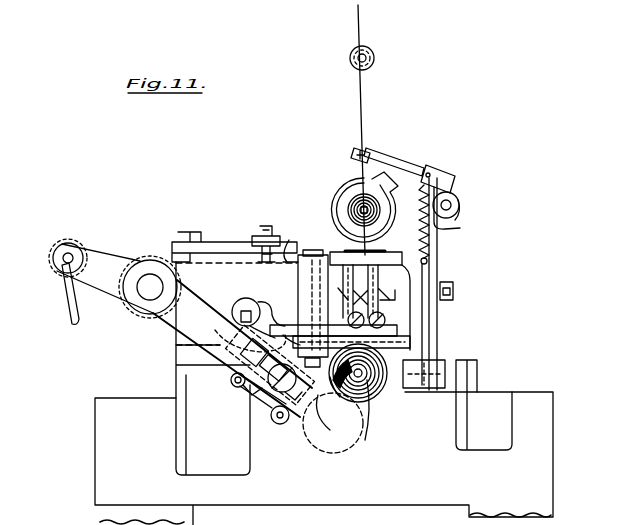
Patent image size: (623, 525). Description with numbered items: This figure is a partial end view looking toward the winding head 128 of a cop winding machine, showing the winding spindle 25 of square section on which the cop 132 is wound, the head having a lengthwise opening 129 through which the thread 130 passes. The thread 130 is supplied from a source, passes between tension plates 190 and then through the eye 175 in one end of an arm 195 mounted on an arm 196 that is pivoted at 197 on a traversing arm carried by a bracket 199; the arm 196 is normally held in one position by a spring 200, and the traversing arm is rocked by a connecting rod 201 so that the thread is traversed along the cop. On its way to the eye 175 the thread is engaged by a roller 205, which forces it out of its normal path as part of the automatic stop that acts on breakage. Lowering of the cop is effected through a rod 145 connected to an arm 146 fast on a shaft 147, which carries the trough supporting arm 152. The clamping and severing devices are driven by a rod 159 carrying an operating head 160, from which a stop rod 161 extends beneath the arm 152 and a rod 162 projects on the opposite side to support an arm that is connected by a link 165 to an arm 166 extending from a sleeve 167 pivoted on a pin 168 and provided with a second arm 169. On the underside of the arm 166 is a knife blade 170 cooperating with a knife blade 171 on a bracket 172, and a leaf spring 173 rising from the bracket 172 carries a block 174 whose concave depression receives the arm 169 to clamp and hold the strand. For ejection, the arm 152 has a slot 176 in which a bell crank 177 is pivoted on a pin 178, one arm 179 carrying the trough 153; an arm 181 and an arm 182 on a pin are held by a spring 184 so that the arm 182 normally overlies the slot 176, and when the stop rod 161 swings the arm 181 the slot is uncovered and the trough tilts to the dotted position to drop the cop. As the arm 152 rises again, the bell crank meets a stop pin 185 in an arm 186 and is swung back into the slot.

The winding spindle 25 is at (378, 212).
The winding head 128 is at (338, 205).
The lengthwise opening 129 is at (355, 205).
The thread 130 is at (362, 20).
The cop 132 is at (384, 395).
The rod 145 is at (62, 303).
The arm 146 is at (99, 250).
The shaft 147 is at (148, 293).
The arm 152 is at (182, 307).
The trough 153 is at (368, 440).
The rod 159 is at (241, 300).
The operating head 160 is at (237, 310).
The rod 161 is at (232, 384).
The rod 162 is at (251, 311).
The link 165 is at (292, 325).
The arm 166 is at (365, 349).
The sleeve 167 is at (284, 243).
The pin 168 is at (306, 255).
The second arm 169 is at (405, 263).
The knife blade 170 is at (382, 386).
The knife blade 171 is at (353, 333).
The bracket 172 is at (387, 342).
The leaf spring 173 is at (385, 298).
The block 174 is at (398, 255).
The eye 175 is at (370, 150).
The slot 176 is at (222, 352).
The bell crank 177 is at (296, 440).
The pin 178 is at (276, 414).
The arm 179 is at (330, 430).
The arm 181 is at (245, 392).
The arm 182 is at (270, 365).
The spring 184 is at (270, 395).
The stop pin 185 is at (252, 238).
The arm 186 is at (222, 242).
The tension plates 190 is at (438, 270).
The arm 195 is at (400, 160).
The arm 196 is at (445, 172).
The pivot 197 is at (452, 205).
The bracket 199 is at (478, 368).
The spring 200 is at (450, 230).
The connecting rod 201 is at (453, 288).
The roller 205 is at (375, 58).